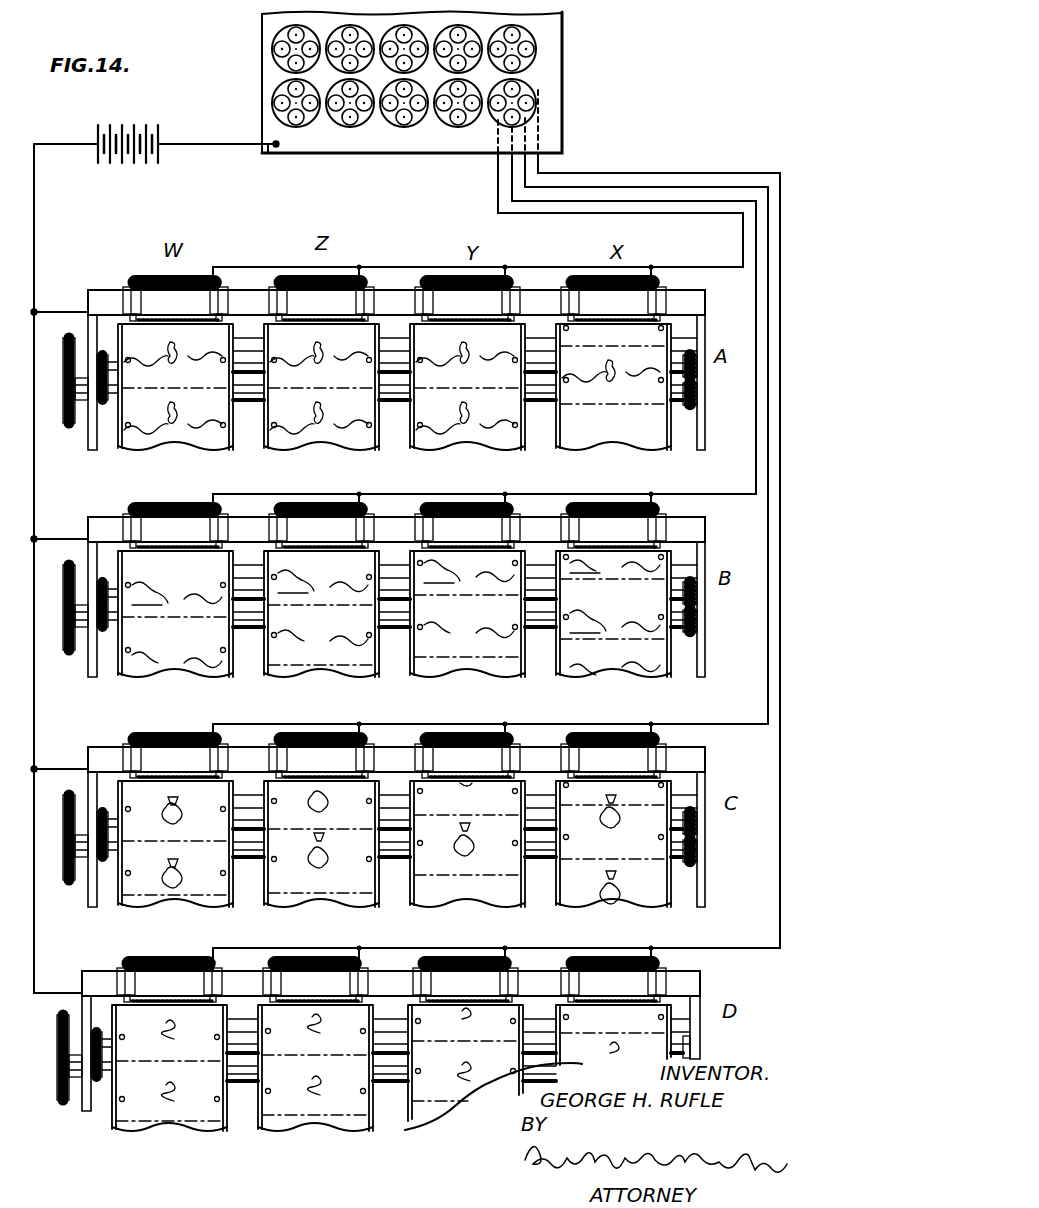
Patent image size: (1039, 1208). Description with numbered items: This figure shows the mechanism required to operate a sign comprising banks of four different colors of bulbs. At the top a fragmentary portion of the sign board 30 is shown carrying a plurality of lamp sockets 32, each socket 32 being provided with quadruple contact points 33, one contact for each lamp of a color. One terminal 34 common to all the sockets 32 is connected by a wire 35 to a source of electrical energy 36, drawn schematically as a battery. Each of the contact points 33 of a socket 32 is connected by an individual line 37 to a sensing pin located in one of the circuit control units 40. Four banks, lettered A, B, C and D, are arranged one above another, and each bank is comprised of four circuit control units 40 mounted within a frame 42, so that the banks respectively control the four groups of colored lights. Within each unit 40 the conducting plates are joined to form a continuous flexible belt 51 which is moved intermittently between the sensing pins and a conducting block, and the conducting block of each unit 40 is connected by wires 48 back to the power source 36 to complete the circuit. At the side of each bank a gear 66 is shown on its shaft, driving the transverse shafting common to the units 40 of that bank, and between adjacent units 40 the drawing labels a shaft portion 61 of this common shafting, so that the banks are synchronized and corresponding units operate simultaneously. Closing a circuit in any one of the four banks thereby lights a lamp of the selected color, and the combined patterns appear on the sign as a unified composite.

The sign board 30 is at (411, 137).
The socket 32 is at (528, 36).
The contact points 33 is at (516, 63).
The terminal 34 is at (277, 147).
The wire 35 is at (224, 148).
The source of electrical energy 36 is at (150, 124).
The lines 37 is at (662, 186).
The circuit control unit 40 is at (391, 643).
The frame 42 is at (372, 695).
The wires 48 is at (34, 224).
The belt 51 is at (391, 750).
The shaft 61 is at (246, 728).
The gear 66 is at (63, 719).